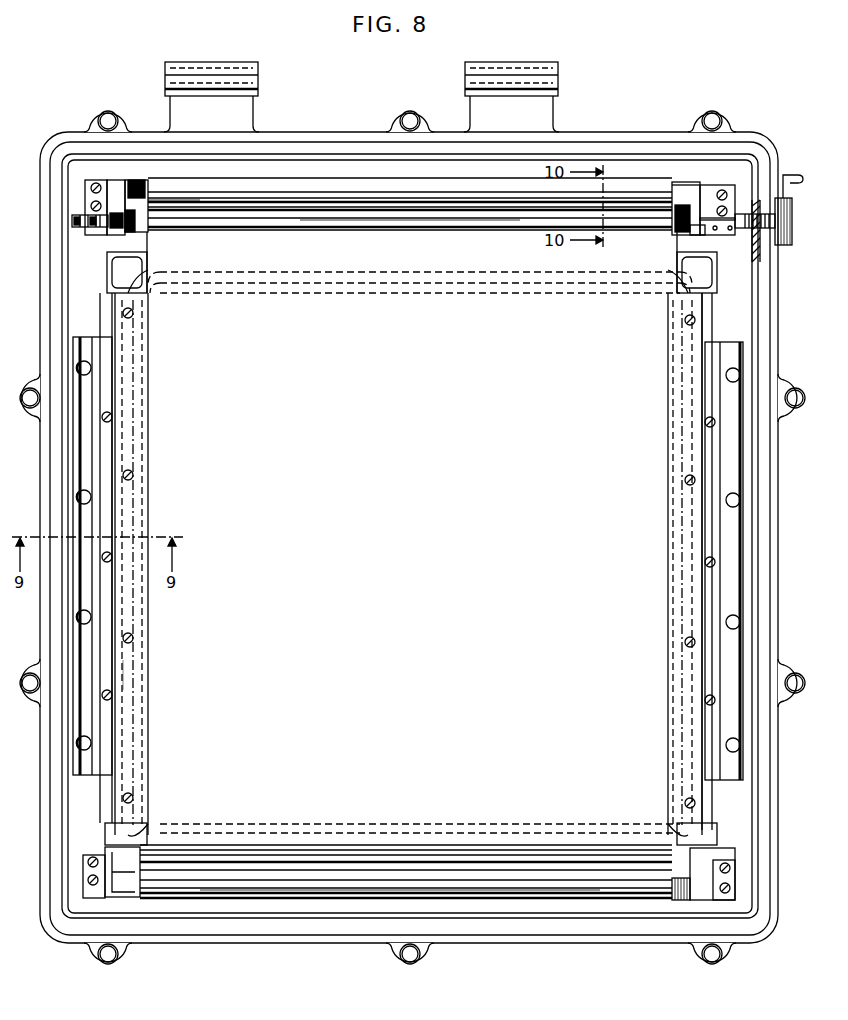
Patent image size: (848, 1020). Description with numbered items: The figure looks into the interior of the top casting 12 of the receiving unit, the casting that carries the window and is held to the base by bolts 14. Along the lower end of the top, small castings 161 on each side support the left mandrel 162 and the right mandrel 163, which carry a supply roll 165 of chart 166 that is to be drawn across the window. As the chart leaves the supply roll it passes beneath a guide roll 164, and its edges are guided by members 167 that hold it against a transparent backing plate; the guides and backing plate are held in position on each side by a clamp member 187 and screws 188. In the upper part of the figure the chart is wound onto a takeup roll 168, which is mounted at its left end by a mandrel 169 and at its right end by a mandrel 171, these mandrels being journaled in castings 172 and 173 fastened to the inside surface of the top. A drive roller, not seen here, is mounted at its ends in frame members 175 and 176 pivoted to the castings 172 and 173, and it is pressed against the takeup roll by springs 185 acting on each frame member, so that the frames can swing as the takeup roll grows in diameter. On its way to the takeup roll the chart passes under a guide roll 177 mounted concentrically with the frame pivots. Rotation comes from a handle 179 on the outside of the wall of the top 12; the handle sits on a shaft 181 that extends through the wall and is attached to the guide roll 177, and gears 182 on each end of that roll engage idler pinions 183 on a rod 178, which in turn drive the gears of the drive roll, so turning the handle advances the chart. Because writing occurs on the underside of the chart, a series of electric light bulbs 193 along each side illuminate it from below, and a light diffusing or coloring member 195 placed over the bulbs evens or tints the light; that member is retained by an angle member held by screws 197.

The top casting 12 is at (243, 943).
The bolts 14 is at (101, 115).
The small castings 161 is at (88, 858).
The left mandrel 162 is at (132, 895).
The right mandrel 163 is at (680, 897).
The guide roll 164 is at (345, 845).
The supply roll 165 is at (325, 900).
The chart 166 is at (418, 566).
The guide members 167 is at (145, 716).
The takeup roll 168 is at (293, 185).
The mandrel 169 is at (130, 183).
The mandrel 171 is at (683, 185).
The casting 172 is at (88, 186).
The casting 173 is at (740, 190).
The frame member 175 is at (118, 237).
The frame member 176 is at (705, 233).
The guide roll 177 is at (350, 225).
The rod 178 is at (150, 205).
The handle 179 is at (785, 248).
The shaft 181 is at (752, 262).
The gears 182 is at (140, 232).
The idler pinions 183 is at (125, 188).
The springs 185 is at (118, 230).
The clamp member 187 is at (130, 672).
The screws 188 is at (133, 475).
The electric light bulbs 193 is at (90, 615).
The light diffusing or coloring member 195 is at (88, 345).
The screws 197 is at (113, 418).